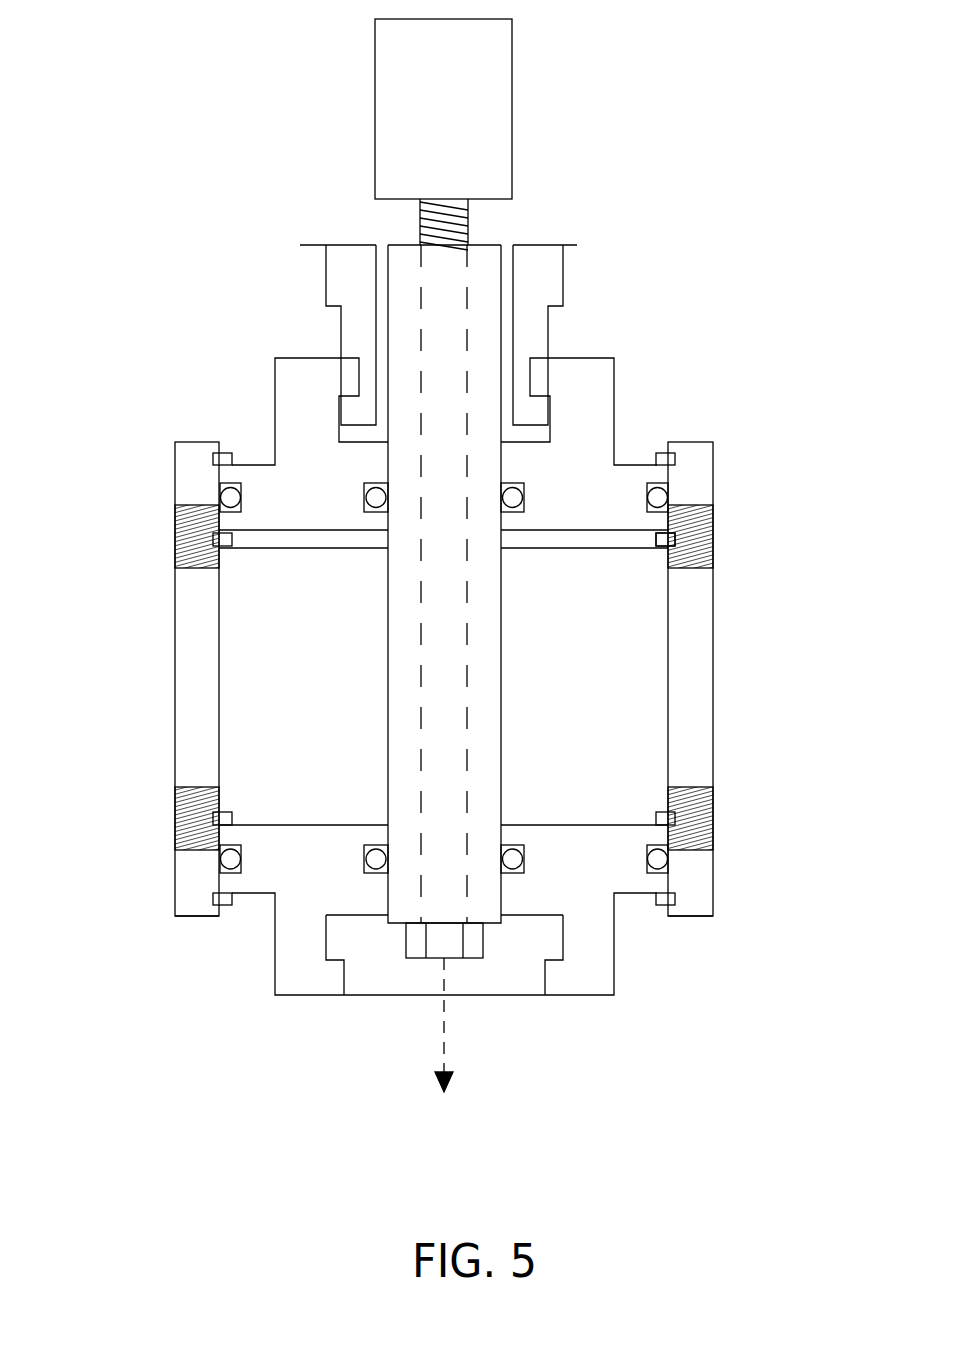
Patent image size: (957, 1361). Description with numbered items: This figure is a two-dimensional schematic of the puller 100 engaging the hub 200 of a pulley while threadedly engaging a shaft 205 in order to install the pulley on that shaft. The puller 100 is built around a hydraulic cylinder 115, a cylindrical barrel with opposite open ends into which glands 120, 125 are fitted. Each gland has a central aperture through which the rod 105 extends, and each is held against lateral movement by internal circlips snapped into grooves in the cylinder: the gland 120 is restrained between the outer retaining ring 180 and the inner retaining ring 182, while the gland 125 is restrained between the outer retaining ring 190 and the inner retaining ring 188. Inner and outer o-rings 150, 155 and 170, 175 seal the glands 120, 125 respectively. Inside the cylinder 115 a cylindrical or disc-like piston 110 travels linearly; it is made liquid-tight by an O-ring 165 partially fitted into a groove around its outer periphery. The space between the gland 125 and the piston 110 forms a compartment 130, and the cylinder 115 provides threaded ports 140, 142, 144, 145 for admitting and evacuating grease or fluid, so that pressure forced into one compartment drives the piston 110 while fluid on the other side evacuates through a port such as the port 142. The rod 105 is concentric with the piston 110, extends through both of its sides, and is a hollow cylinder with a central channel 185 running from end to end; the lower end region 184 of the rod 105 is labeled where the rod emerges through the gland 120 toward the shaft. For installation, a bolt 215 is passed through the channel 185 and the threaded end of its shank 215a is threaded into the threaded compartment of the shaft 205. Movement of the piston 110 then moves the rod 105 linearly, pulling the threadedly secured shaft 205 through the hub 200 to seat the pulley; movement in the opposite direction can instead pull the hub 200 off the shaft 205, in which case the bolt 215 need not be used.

The puller 100 is at (569, 1003).
The rod 105 is at (487, 612).
The piston 110 is at (580, 600).
The hydraulic cylinder 115 is at (187, 688).
The gland 120 is at (293, 963).
The gland 125 is at (308, 400).
The compartment 130 is at (300, 540).
The port 140 is at (175, 822).
The port 142 is at (714, 820).
The port 144 is at (715, 538).
The port 145 is at (175, 545).
The inner o-ring 150 is at (513, 860).
The outer o-ring 155 is at (657, 860).
The O-ring 165 is at (658, 780).
The inner o-ring 170 is at (512, 497).
The outer o-ring 175 is at (655, 493).
The outer retaining ring 180 is at (661, 907).
The inner retaining ring 182 is at (664, 818).
The shaft lower end 184 is at (482, 913).
The central channel 185 is at (463, 839).
The inner retaining ring 188 is at (663, 550).
The outer retaining ring 190 is at (662, 452).
The hub 200 is at (557, 281).
The shaft 205 is at (391, 188).
The bolt 215 is at (431, 955).
The shank 215a is at (468, 228).